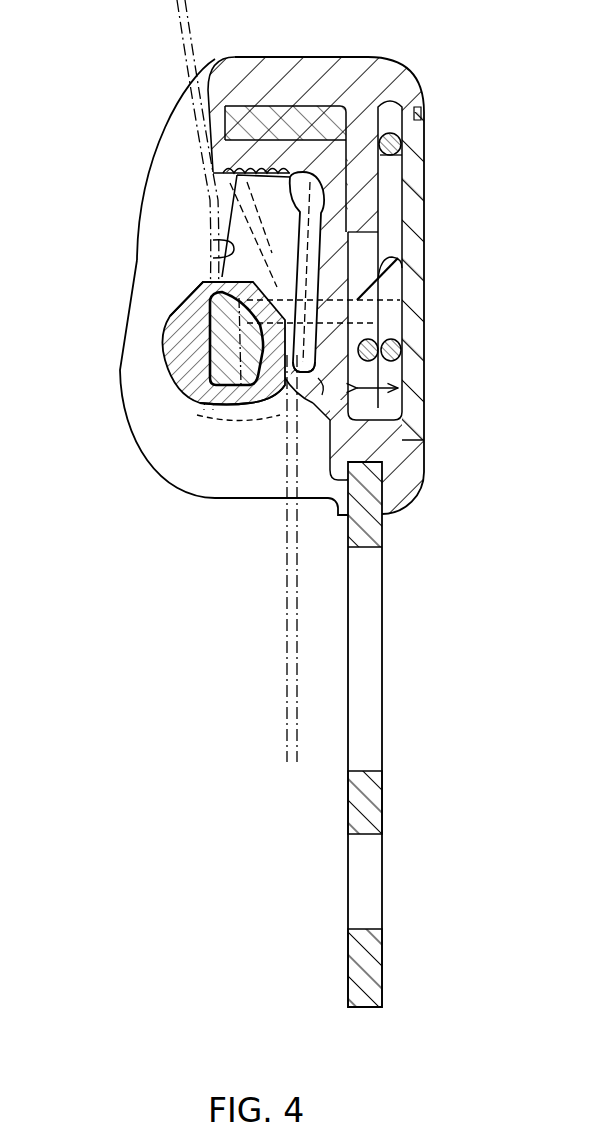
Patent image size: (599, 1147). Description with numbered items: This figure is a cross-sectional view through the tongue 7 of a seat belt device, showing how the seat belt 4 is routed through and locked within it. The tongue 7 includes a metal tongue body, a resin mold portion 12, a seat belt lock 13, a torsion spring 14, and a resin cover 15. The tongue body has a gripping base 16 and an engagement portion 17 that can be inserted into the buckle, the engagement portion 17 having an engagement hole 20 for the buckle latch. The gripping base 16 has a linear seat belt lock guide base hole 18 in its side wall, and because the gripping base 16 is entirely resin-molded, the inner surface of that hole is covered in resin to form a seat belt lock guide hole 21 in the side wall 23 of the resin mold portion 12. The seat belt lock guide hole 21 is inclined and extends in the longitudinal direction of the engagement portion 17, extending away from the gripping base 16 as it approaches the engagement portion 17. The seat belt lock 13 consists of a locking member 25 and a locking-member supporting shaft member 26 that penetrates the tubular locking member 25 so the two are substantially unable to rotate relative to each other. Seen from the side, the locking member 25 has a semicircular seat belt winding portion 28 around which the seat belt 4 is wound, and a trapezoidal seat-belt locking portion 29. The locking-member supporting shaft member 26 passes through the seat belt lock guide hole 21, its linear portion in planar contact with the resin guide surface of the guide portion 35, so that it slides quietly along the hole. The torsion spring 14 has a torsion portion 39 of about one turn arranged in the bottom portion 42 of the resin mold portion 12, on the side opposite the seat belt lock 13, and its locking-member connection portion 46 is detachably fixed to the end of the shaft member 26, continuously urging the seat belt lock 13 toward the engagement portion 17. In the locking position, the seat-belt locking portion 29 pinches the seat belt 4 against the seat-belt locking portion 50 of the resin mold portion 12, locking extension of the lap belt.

The seat belt 4 is at (187, 67).
The tongue 7 is at (458, 475).
The resin mold portion 12 is at (383, 77).
The seat belt lock 13 is at (157, 365).
The torsion spring 14 is at (392, 232).
The resin cover 15 is at (420, 300).
The gripping base 16 is at (380, 174).
The engagement portion 17 is at (375, 794).
The seat belt lock guide base hole 18 is at (230, 183).
The engagement hole 20 is at (363, 928).
The seat belt lock guide hole 21 is at (233, 174).
The side wall 23 is at (157, 170).
The locking member 25 is at (180, 332).
The locking-member supporting shaft member 26 is at (235, 380).
The seat belt winding portion 28 is at (210, 360).
The seat-belt locking portion 29 is at (212, 282).
The guide portion 35 is at (213, 255).
The torsion portion 39 is at (392, 332).
The bottom portion 42 is at (322, 380).
The locking-member connection portion 46 is at (203, 322).
The seat-belt locking portion 50 is at (260, 167).